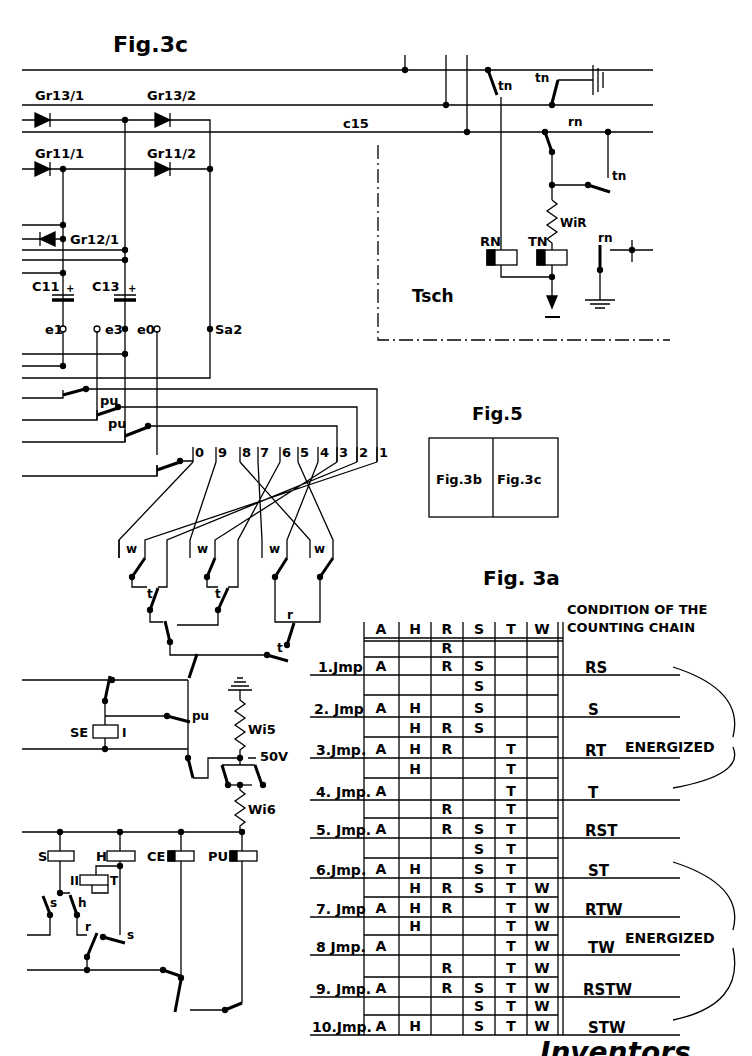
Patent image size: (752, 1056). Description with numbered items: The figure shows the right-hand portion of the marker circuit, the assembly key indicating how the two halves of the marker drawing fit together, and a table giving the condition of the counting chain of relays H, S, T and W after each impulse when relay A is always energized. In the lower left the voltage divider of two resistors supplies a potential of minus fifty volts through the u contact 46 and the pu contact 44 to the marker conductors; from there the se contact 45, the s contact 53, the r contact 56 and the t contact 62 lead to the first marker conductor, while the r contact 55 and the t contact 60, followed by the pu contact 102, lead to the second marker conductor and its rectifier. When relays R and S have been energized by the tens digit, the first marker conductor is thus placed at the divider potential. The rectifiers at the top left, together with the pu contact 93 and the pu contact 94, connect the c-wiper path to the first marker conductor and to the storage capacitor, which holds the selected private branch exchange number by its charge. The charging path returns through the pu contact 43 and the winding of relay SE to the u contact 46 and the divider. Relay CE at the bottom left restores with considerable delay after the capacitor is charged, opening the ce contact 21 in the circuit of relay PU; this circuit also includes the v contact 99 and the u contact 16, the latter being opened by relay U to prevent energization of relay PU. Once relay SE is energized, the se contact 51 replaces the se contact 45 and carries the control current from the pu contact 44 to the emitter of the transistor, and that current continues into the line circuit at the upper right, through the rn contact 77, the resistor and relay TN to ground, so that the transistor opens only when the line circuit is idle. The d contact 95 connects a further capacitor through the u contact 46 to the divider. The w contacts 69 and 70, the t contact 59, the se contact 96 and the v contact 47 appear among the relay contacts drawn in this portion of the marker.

The pu contact 93 is at (199, 418).
The pu contact 94 is at (59, 411).
The pu contact 102 is at (213, 434).
The w contact 70 is at (121, 558).
The w contact 69 is at (143, 569).
The t contact 59 is at (146, 608).
The t contact 60 is at (162, 600).
The t contact 62 is at (211, 606).
The r contact 56 is at (181, 625).
The r contact 55 is at (205, 639).
The s contact 53 is at (191, 657).
The se contact 51 is at (105, 684).
The se contact 45 is at (124, 673).
The pu contact 43 is at (199, 698).
The pu contact 44 is at (188, 737).
The u contact 46 is at (197, 769).
The d contact 95 is at (227, 779).
The se contact 96 is at (277, 779).
The v contact 47 is at (196, 919).
The v contact 99 is at (188, 981).
The ce contact 21 is at (185, 998).
The u contact 16 is at (247, 937).
The rn contact 77 is at (535, 157).